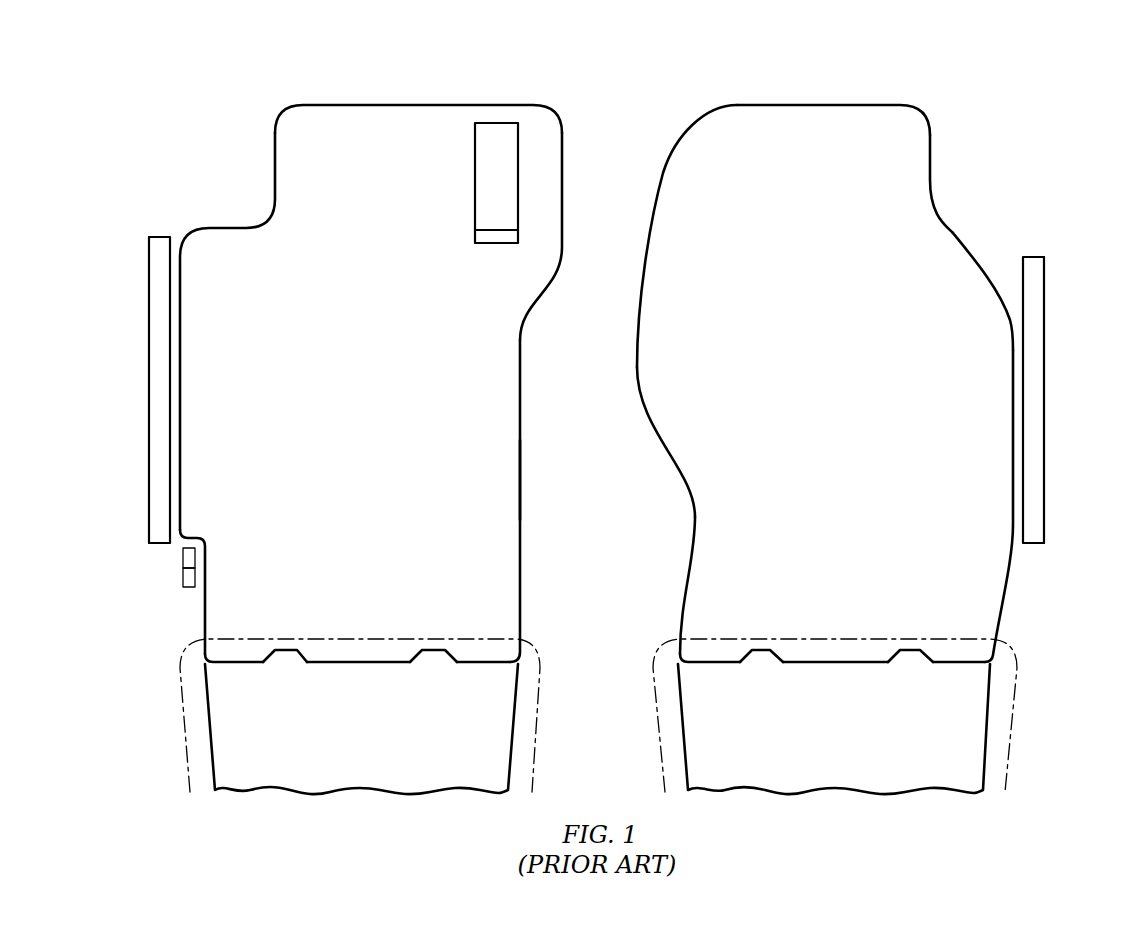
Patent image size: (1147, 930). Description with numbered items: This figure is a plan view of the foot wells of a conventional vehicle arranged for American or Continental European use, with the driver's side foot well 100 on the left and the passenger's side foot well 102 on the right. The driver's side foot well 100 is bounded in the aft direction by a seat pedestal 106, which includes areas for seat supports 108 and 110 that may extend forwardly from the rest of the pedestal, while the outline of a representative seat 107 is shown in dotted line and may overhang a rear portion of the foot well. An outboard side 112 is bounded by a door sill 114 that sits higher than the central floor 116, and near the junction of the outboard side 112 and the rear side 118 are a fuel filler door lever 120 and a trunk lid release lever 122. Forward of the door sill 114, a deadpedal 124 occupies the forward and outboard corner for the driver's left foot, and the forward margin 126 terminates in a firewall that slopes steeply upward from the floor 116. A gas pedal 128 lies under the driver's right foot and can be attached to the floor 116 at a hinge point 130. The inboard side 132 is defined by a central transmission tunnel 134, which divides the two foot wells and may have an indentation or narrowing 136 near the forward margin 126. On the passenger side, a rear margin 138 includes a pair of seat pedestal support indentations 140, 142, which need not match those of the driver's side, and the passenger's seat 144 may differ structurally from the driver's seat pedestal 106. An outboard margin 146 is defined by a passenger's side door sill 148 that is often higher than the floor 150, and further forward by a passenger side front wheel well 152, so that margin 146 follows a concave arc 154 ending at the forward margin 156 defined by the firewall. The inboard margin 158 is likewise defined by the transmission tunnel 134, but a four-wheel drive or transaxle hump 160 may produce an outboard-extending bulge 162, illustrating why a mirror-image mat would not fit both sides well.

The driver's side foot well 100 is at (178, 217).
The passenger's side foot well 102 is at (1034, 223).
The seat pedestal 106 is at (380, 740).
The seat 107 is at (188, 760).
The seat support 108 is at (285, 656).
The seat support 110 is at (433, 656).
The outboard side 112 is at (178, 377).
The door sill 114 is at (149, 346).
The central floor 116 is at (365, 391).
The rear side 118 is at (375, 660).
The fuel filler door lever 120 is at (183, 557).
The trunk lid release lever 122 is at (183, 580).
The deadpedal 124 is at (252, 188).
The forward margin 126 is at (383, 104).
The gas pedal 128 is at (487, 170).
The hinge point 130 is at (490, 230).
The inboard side 132 is at (520, 417).
The central transmission tunnel 134 is at (605, 468).
The indentation or narrowing 136 is at (562, 186).
The rear margin 138 is at (828, 660).
The seat pedestal support indentation 140 is at (760, 656).
The seat pedestal support indentation 142 is at (908, 656).
The passenger's seat 144 is at (855, 740).
The outboard margin 146 is at (1015, 406).
The passenger's side door sill 148 is at (1045, 346).
The floor 150 is at (843, 391).
The passenger side front wheel well 152 is at (987, 173).
The arc 154 is at (955, 234).
The forward margin 156 is at (825, 104).
The inboard margin 158 is at (637, 326).
The four-wheel drive or transaxle hump 160 is at (660, 553).
The outboard-extending bulge 162 is at (686, 477).